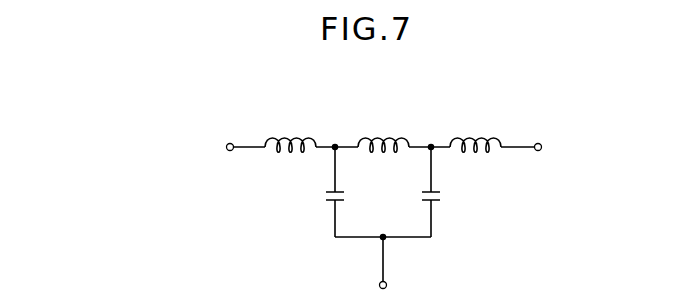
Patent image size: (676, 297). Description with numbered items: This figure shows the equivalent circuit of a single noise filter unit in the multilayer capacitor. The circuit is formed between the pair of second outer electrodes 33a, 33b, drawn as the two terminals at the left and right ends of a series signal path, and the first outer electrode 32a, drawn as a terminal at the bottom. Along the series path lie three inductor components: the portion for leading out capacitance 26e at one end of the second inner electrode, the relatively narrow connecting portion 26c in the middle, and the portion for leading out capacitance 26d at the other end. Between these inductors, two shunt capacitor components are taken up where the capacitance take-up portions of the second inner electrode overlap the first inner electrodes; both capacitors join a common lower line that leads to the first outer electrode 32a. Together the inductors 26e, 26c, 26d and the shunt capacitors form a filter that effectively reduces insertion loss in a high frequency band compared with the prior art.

The second outer electrode 33a is at (222, 147).
The second outer electrode 33b is at (530, 146).
The portion for leading out capacitance 26e is at (284, 136).
The connecting portion 26c is at (378, 136).
The portion for leading out capacitance 26d is at (481, 136).
The first outer electrode 32a is at (385, 272).